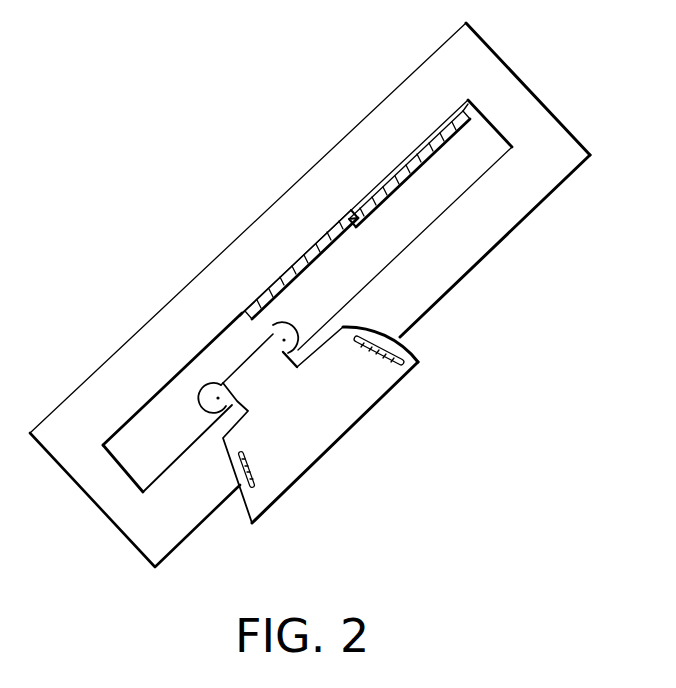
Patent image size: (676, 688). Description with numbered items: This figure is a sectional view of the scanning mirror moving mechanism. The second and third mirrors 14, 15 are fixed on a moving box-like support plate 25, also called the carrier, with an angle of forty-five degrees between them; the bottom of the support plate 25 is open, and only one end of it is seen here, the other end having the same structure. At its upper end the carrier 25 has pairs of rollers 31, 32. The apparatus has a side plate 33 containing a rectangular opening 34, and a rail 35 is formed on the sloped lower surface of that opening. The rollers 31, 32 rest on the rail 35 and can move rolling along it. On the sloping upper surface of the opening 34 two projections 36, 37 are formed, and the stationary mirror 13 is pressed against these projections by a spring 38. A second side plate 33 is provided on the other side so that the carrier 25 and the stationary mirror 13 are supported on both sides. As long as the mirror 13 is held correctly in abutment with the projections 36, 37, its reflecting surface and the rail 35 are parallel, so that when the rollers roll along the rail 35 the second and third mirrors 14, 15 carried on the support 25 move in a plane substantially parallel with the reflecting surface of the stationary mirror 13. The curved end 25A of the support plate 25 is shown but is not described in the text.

The stationary mirror 13 is at (380, 193).
The second mirror 14 is at (253, 487).
The third mirror 15 is at (405, 366).
The box-like support plate 25 is at (353, 415).
The curved end of slider 25A is at (395, 330).
The roller 31 is at (199, 397).
The roller 32 is at (268, 331).
The side plate 33 is at (535, 115).
The rectangular opening 34 is at (492, 147).
The rail 35 is at (473, 182).
The projection 36 is at (455, 120).
The projection 37 is at (260, 307).
The spring 38 is at (365, 228).